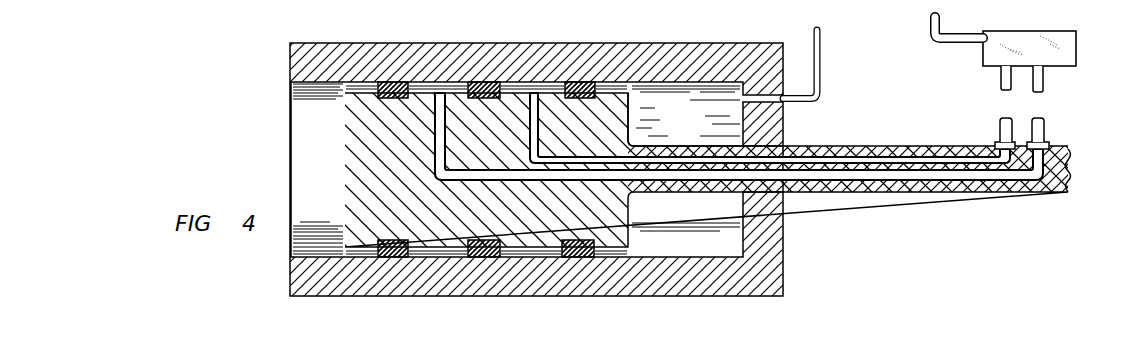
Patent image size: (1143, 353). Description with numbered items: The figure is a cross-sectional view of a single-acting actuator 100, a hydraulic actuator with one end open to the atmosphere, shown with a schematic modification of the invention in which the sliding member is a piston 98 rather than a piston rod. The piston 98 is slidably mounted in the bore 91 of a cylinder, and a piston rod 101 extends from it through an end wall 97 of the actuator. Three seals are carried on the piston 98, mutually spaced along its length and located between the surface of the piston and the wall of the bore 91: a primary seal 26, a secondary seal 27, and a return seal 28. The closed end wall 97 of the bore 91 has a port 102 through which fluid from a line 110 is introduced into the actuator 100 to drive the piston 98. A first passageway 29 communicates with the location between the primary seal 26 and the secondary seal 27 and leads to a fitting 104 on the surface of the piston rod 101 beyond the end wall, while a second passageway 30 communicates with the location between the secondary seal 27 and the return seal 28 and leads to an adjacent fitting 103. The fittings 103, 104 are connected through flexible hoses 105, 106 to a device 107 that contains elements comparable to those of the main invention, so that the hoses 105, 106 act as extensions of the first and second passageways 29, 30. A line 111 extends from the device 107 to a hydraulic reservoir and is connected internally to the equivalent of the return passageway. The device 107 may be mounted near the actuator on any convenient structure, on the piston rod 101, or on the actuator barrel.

The single-acting actuator 100 is at (660, 33).
The end wall 97 is at (784, 130).
The bore 91 is at (333, 83).
The piston rod 101 is at (865, 193).
The second passageway 30 is at (963, 182).
The first passageway 29 is at (848, 157).
The return seal 28 is at (418, 82).
The secondary seal 27 is at (515, 82).
The primary seal 26 is at (597, 82).
The piston 98 is at (629, 107).
The port 102 is at (746, 97).
The line 110 is at (821, 54).
The fitting 104 is at (993, 142).
The fitting 103 is at (1050, 144).
The device 107 is at (1077, 50).
The line 111 is at (963, 47).
The flexible hose 106 is at (999, 84).
The flexible hose 105 is at (1046, 83).